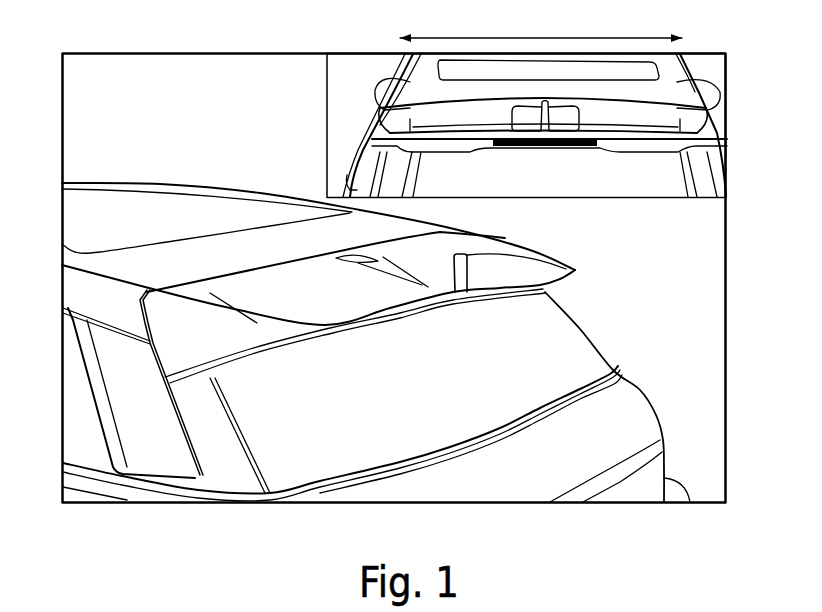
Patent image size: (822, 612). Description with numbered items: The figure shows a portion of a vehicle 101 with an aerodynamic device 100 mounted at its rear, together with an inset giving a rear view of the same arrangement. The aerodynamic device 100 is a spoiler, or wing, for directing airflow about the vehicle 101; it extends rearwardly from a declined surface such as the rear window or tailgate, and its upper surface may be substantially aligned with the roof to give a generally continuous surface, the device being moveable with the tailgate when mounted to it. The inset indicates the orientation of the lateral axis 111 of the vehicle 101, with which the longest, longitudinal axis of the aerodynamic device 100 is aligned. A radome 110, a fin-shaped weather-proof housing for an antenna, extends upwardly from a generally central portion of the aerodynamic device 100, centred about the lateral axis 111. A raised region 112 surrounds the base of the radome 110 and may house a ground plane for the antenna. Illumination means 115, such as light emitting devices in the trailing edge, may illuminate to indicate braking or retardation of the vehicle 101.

The aerodynamic device 100 is at (322, 307).
The vehicle 101 is at (376, 396).
The radome 110 is at (465, 276).
The lateral axis 111 is at (541, 28).
The raised region 112 is at (338, 258).
The illumination means 115 is at (550, 147).